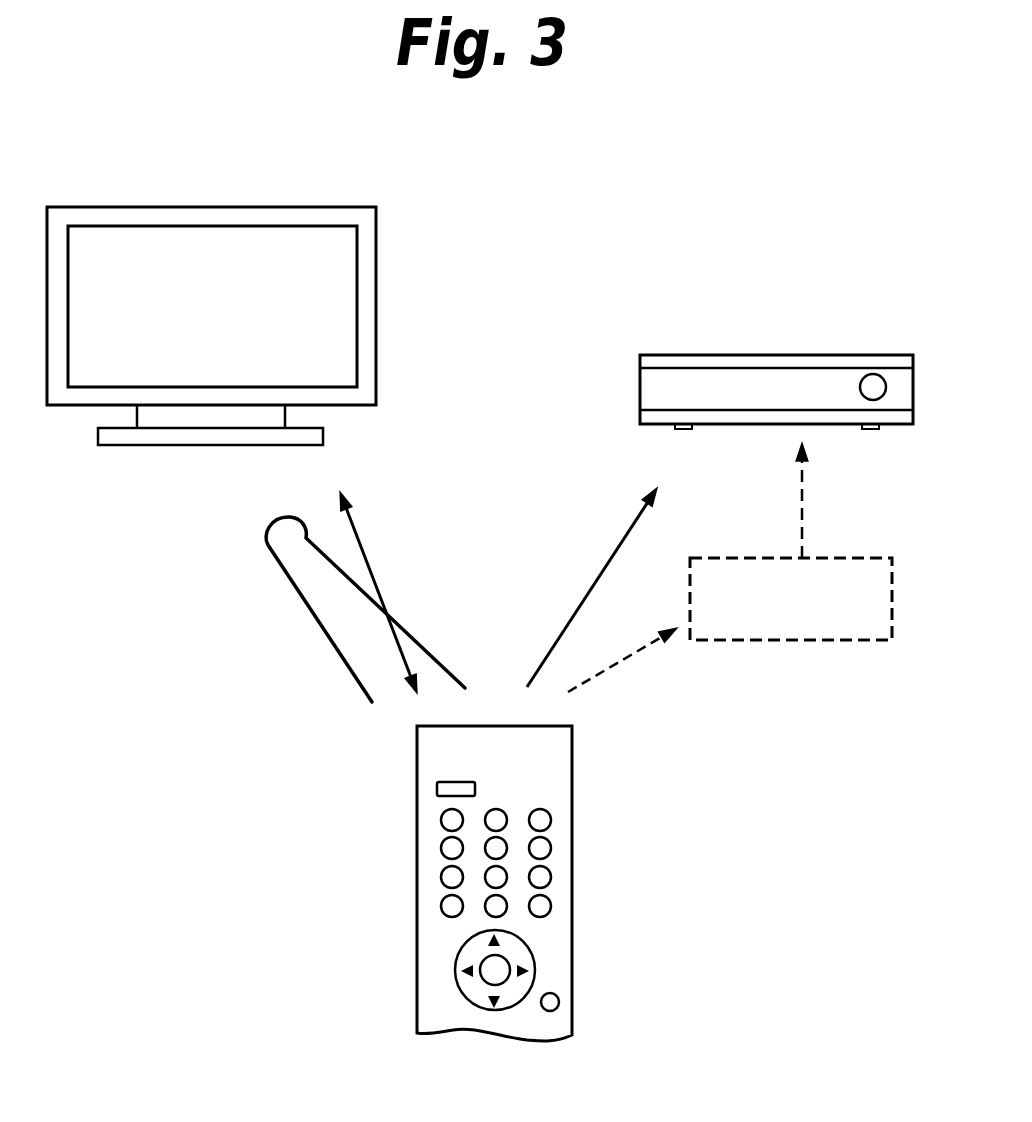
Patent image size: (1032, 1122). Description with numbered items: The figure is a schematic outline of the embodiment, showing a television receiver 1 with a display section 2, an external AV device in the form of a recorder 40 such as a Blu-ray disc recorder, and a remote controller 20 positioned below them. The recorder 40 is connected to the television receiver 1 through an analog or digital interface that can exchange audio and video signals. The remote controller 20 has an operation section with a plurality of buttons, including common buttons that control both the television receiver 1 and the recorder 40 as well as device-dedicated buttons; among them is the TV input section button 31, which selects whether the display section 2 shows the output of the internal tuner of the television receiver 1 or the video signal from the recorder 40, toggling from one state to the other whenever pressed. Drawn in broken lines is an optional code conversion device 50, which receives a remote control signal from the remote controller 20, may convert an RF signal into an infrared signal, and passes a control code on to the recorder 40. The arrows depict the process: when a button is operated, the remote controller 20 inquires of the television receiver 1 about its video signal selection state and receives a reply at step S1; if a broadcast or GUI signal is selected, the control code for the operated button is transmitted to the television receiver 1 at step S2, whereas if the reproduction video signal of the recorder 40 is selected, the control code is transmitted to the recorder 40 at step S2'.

The television receiver 1 is at (213, 206).
The display section 2 is at (330, 302).
The remote controller 20 is at (417, 868).
The TV input section button 31 is at (437, 790).
The recorder 40 is at (781, 354).
The code conversion device 50 is at (847, 558).
The inquiry and reply step S1 is at (288, 578).
The control code transmission to television receiver S2 is at (389, 592).
The control code transmission to recorder S2' is at (592, 587).